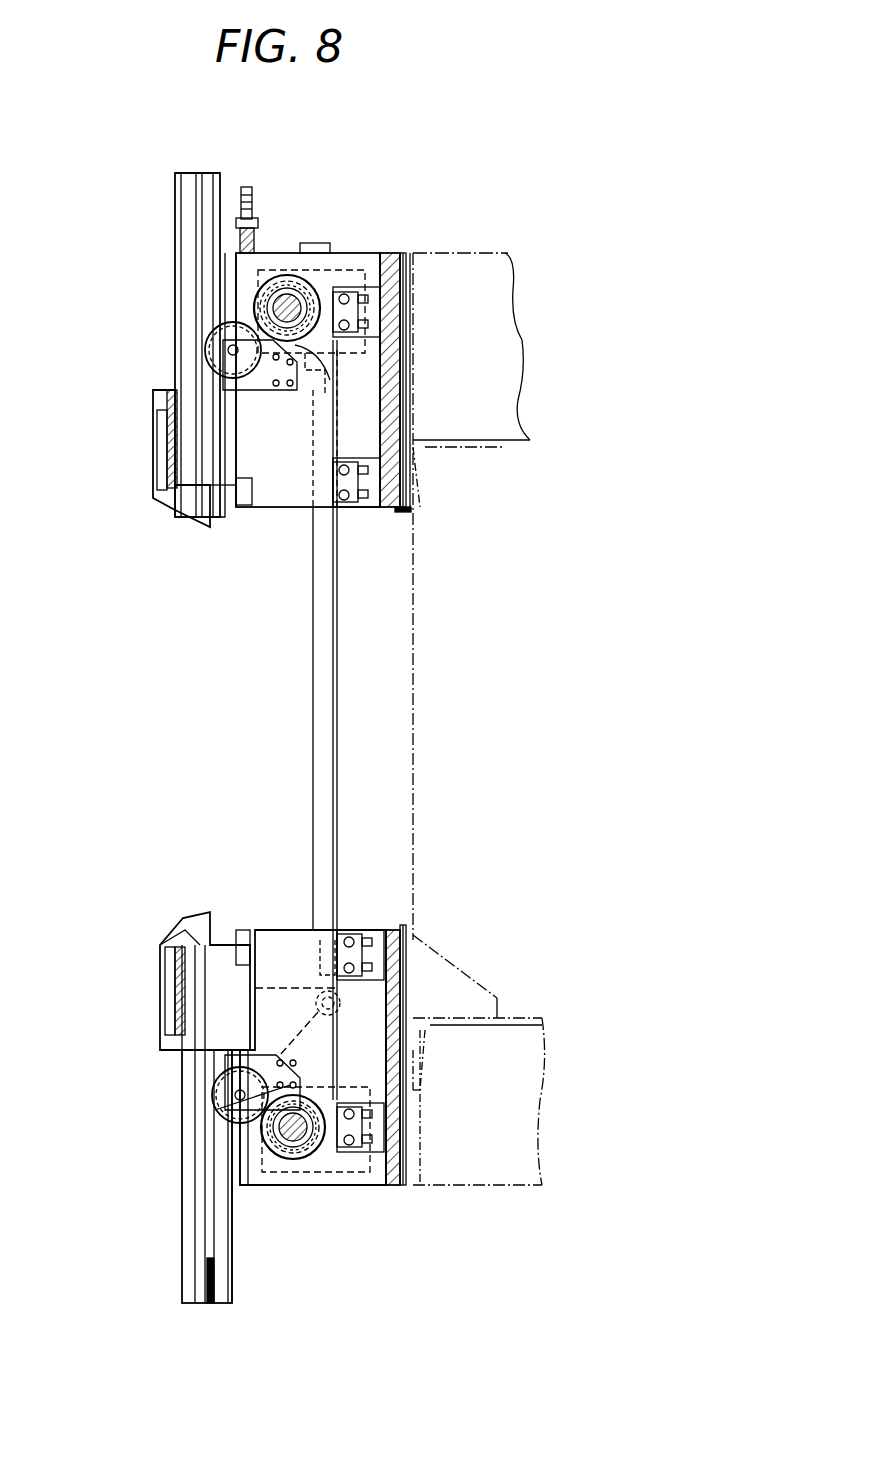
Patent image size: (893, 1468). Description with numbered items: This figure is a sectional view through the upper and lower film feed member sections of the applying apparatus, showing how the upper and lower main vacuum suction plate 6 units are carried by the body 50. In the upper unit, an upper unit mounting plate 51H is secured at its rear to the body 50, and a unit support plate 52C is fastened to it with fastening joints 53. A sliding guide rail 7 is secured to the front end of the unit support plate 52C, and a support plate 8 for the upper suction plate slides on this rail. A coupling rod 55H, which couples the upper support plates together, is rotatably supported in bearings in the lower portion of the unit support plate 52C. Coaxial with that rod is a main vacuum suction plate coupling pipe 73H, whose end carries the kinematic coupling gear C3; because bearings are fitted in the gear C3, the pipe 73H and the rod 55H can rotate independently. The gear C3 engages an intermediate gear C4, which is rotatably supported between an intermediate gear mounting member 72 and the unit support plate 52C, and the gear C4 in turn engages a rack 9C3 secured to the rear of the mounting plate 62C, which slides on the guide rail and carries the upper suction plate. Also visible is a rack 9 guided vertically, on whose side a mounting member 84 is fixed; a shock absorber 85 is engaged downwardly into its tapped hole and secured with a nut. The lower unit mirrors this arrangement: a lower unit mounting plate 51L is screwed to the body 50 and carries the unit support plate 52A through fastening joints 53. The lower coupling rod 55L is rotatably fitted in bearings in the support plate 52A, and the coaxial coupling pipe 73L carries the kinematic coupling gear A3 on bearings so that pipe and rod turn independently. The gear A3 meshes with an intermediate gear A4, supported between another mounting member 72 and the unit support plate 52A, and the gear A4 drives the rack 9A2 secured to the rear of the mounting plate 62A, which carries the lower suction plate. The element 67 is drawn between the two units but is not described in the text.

The rack 9C3 is at (195, 185).
The shock absorber 85 is at (245, 187).
The mounting member 84 is at (260, 253).
The coupling rod 55H is at (285, 290).
The rack 9 is at (290, 292).
The main vacuum suction plate coupling pipe 73H is at (300, 300).
The upper unit mounting plate 51H is at (390, 260).
The fastening joint 53 is at (370, 310).
The support plate 8 is at (215, 210).
The sliding guide rail 7 is at (235, 273).
The intermediate gear C4 is at (205, 338).
The mounting plate 62C is at (172, 428).
The intermediate gear mounting member 72 is at (270, 392).
The main vacuum suction plate kinematic coupling gear C3 is at (300, 345).
The main vacuum suction plate 6 is at (200, 503).
The unit support plate 52C is at (277, 510).
The body of the applying apparatus 50 is at (506, 447).
The belt 67 is at (333, 698).
The unit support plate 52A is at (262, 928).
The lower unit mounting plate 51L is at (395, 945).
The mounting plate 62A is at (178, 983).
The intermediate gear A4 is at (212, 1096).
The rack 9A2 is at (197, 1240).
The coupling rod 55L is at (290, 1158).
The main vacuum suction plate coupling pipe 73L is at (298, 1148).
The main vacuum suction plate kinematic coupling gear A3 is at (320, 1148).